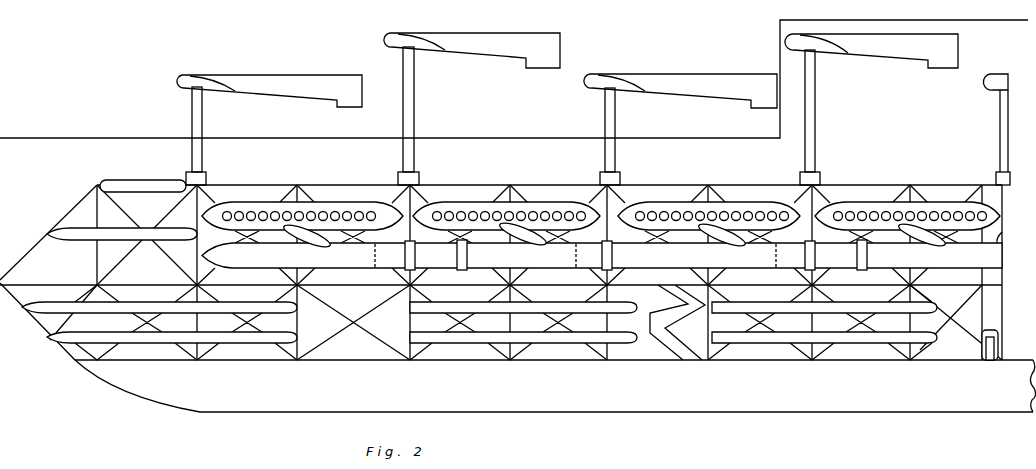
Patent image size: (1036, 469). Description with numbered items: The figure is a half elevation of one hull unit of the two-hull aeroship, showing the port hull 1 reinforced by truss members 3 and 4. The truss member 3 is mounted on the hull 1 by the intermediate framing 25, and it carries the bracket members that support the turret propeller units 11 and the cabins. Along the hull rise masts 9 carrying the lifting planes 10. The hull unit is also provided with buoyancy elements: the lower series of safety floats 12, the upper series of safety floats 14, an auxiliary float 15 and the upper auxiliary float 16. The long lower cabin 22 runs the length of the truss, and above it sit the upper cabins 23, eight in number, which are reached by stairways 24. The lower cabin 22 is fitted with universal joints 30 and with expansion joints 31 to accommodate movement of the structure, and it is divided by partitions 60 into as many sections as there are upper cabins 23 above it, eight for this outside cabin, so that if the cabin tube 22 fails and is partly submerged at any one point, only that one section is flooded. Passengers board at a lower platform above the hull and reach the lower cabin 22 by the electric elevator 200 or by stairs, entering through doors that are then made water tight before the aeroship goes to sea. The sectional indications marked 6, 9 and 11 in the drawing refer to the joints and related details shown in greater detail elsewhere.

The port hull 1 is at (1027, 31).
The truss member 3 is at (96, 203).
The truss member 4 is at (643, 62).
The section line 6 is at (390, 278).
The mast 9 is at (442, 278).
The lifting plane 10 is at (383, 39).
The propeller unit 11 is at (572, 278).
The lower series of safety floats 12 is at (86, 343).
The upper series of safety floats 14 is at (48, 314).
The auxiliary float 15 is at (76, 232).
The upper auxiliary float 16 is at (129, 181).
The lower cabin 22 is at (200, 250).
The upper cabin 23 is at (237, 202).
The stairway 24 is at (300, 240).
The intermediate framing 25 is at (340, 312).
The universal joint 30 is at (416, 253).
The expansion joint 31 is at (468, 251).
The partition 60 is at (373, 253).
The electric elevator 200 is at (985, 361).